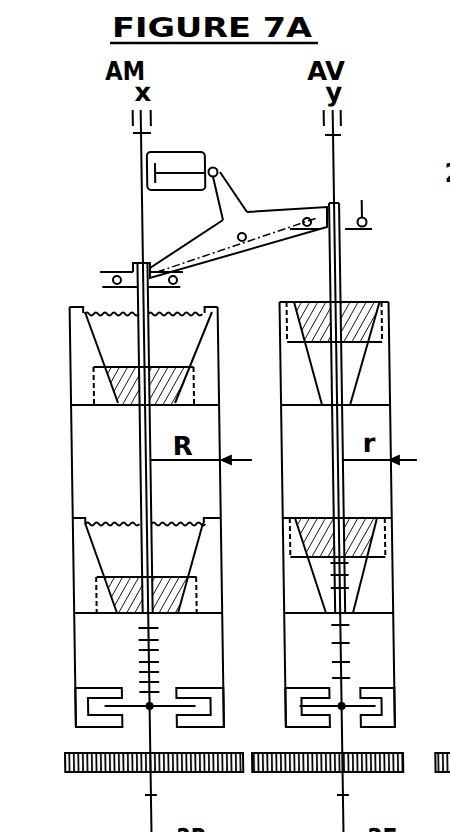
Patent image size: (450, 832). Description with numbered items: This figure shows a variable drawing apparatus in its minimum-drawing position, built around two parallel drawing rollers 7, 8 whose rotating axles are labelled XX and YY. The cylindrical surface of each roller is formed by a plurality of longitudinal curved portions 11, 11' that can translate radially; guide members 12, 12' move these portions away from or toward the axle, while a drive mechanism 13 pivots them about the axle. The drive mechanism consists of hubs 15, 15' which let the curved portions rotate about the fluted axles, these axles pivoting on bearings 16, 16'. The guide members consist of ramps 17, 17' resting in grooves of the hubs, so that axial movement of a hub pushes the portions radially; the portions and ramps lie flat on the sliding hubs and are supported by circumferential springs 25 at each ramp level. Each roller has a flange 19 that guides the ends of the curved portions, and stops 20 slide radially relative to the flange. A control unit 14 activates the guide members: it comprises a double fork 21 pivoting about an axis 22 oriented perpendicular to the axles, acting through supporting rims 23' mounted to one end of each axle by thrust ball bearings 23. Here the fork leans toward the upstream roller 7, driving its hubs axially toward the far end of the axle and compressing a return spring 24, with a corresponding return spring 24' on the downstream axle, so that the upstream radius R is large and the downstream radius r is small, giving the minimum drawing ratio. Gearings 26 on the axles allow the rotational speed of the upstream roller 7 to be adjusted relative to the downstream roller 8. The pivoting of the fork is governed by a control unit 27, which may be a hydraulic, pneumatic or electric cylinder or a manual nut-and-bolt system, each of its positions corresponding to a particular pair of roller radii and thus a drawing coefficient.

The drawing roller 7 is at (64, 531).
The drawing roller 8 is at (394, 371).
The longitudinal curved portion 11 is at (160, 406).
The longitudinal curved portion 11' is at (350, 399).
The guide member 12 is at (299, 477).
The guide member 12' is at (327, 432).
The drive mechanism 13 is at (109, 414).
The control unit 14 is at (251, 162).
The hub 15 is at (263, 460).
The hub 15' is at (339, 299).
The bearing 16 is at (165, 803).
The bearing 16' is at (360, 803).
The ramp 17 is at (118, 475).
The ramp 17' is at (316, 474).
The flange 19 is at (118, 712).
The stop 20 is at (82, 714).
The double fork 21 is at (260, 207).
The axis 22 is at (244, 241).
The thrust ball bearing 23 is at (160, 256).
The supporting rim 23' is at (347, 193).
The return spring 24 is at (172, 657).
The return spring 24' is at (386, 620).
The circumferential spring 25 is at (114, 313).
The gearing 26 is at (296, 772).
The control unit 27 is at (176, 153).